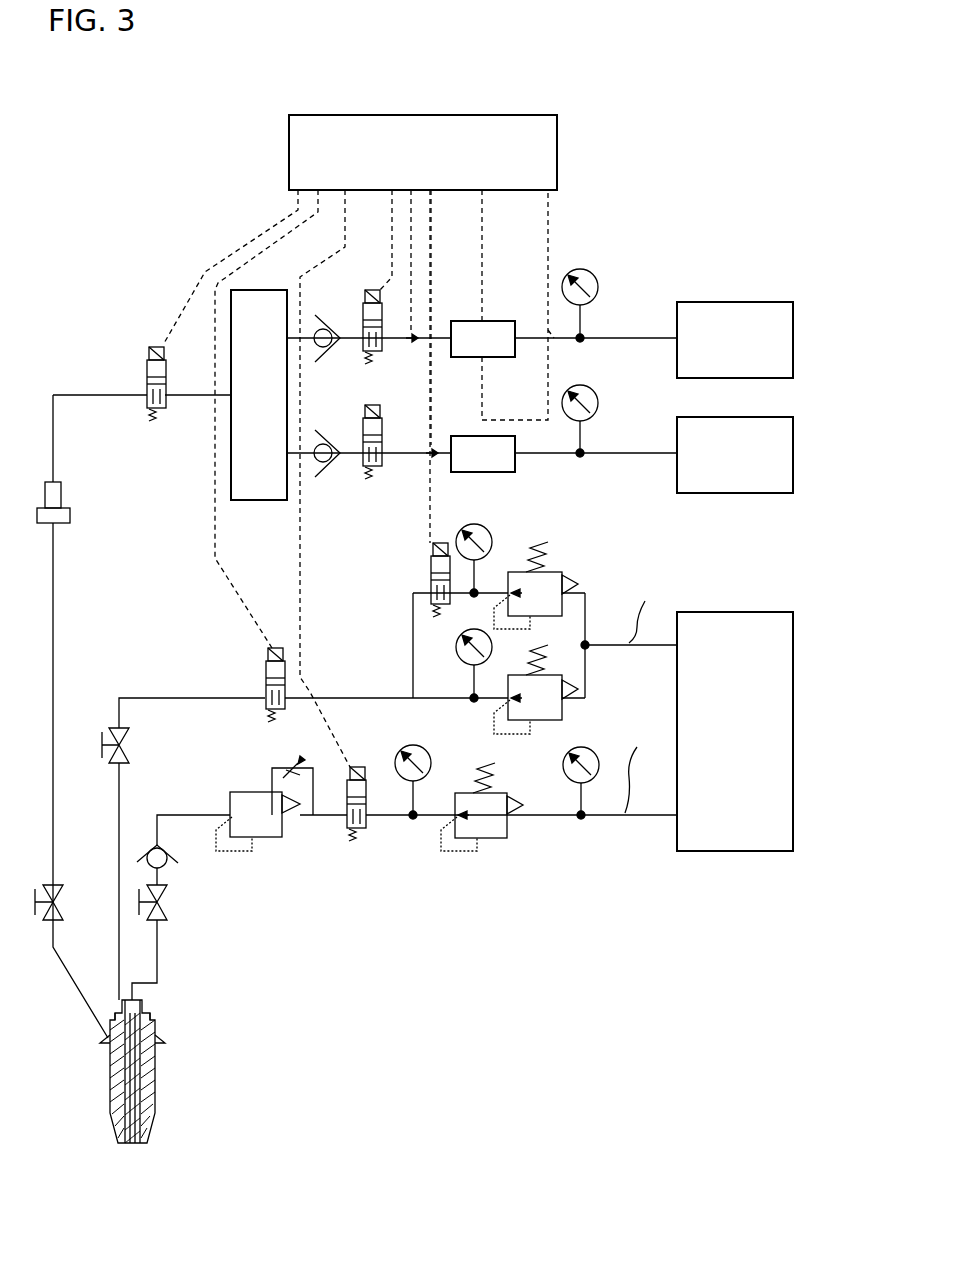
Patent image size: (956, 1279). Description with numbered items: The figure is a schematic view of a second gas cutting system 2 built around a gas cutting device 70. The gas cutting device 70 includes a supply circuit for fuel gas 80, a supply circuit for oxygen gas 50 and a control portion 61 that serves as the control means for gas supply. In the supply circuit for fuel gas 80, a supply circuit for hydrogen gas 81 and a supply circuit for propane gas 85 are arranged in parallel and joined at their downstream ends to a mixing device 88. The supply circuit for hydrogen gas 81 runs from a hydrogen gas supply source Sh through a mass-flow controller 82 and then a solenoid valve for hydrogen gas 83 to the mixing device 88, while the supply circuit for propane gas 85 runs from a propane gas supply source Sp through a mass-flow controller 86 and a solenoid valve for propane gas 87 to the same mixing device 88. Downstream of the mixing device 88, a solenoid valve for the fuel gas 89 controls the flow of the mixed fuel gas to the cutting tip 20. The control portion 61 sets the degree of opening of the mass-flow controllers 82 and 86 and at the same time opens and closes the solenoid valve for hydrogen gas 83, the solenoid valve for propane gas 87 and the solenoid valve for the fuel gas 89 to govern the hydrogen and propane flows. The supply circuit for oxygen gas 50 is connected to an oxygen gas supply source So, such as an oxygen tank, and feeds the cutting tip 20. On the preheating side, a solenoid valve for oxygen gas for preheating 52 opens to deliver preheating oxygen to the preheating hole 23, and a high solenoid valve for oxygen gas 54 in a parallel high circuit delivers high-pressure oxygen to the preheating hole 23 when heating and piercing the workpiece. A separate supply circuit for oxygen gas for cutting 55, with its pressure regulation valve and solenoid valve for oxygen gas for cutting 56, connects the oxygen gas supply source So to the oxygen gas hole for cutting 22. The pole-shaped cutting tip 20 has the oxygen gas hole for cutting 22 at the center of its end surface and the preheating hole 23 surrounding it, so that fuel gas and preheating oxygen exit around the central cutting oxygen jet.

The gas cutting apparatus 2 is at (690, 84).
The gas cutting device 70 is at (684, 158).
The control portion 61 is at (557, 150).
The mass-flow controller 82 is at (500, 320).
The supply circuit for hydrogen gas 81 is at (633, 338).
The supply circuit for propane gas 85 is at (631, 452).
The mass-flow controller 86 is at (518, 463).
The solenoid valve for hydrogen gas 83 is at (362, 348).
The solenoid valve for propane gas 87 is at (362, 462).
The mixing device 88 is at (265, 500).
The solenoid valve for the fuel gas 89 is at (147, 360).
The supply circuit for fuel gas 80 is at (79, 393).
The high solenoid valve for oxygen gas 54 is at (429, 590).
The solenoid valve for oxygen gas for preheating 52 is at (265, 669).
The supply circuit for oxygen gas 50 is at (168, 668).
The solenoid valve for oxygen gas for cutting 56 is at (368, 780).
The supply circuit for oxygen gas for cutting 55 is at (212, 815).
The cutting tip 20 is at (185, 1111).
The oxygen gas hole for cutting 22 is at (132, 1147).
The preheating hole 23 is at (141, 1147).
The hydrogen gas supply source Sh is at (793, 322).
The propane gas supply source Sp is at (793, 455).
The oxygen gas supply source So is at (793, 650).